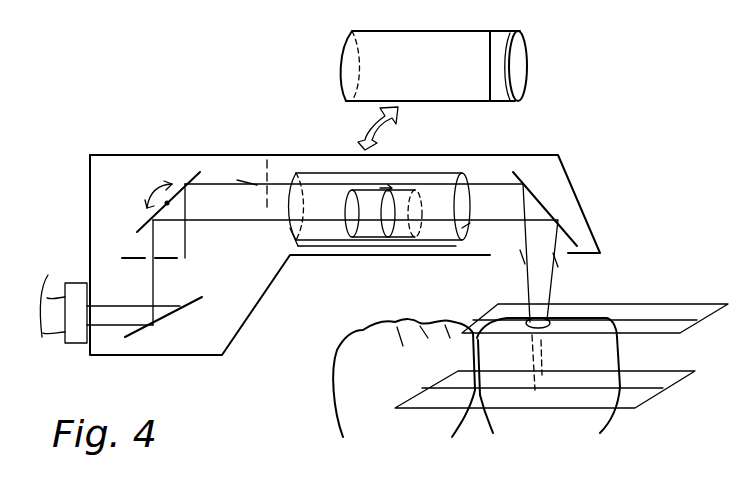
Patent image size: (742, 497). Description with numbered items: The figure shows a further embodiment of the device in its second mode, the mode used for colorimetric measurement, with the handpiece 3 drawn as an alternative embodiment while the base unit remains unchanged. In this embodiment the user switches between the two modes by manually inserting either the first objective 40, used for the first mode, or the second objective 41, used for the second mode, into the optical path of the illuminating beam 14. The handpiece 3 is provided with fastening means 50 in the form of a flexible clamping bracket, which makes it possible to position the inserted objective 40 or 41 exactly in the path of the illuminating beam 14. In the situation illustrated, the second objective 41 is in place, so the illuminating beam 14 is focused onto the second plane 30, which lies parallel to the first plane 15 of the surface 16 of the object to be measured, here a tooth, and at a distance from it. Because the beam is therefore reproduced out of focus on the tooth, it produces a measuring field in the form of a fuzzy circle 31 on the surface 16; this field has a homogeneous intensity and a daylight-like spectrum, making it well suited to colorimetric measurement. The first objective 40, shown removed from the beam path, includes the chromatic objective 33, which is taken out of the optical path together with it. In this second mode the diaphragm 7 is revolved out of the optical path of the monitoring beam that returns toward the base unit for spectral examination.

The handpiece 3 is at (527, 155).
The diaphragm 7 is at (128, 257).
The illuminating beam 14 is at (218, 187).
The first plane 15 is at (640, 302).
The surface of the object to be measured 16 is at (566, 314).
The second plane 30 is at (647, 402).
The fuzzy circle 31 is at (268, 165).
The chromatic objective 33 is at (520, 34).
The first objective 40 is at (390, 42).
The second objective 41 is at (437, 155).
The fastening means 50 is at (355, 238).